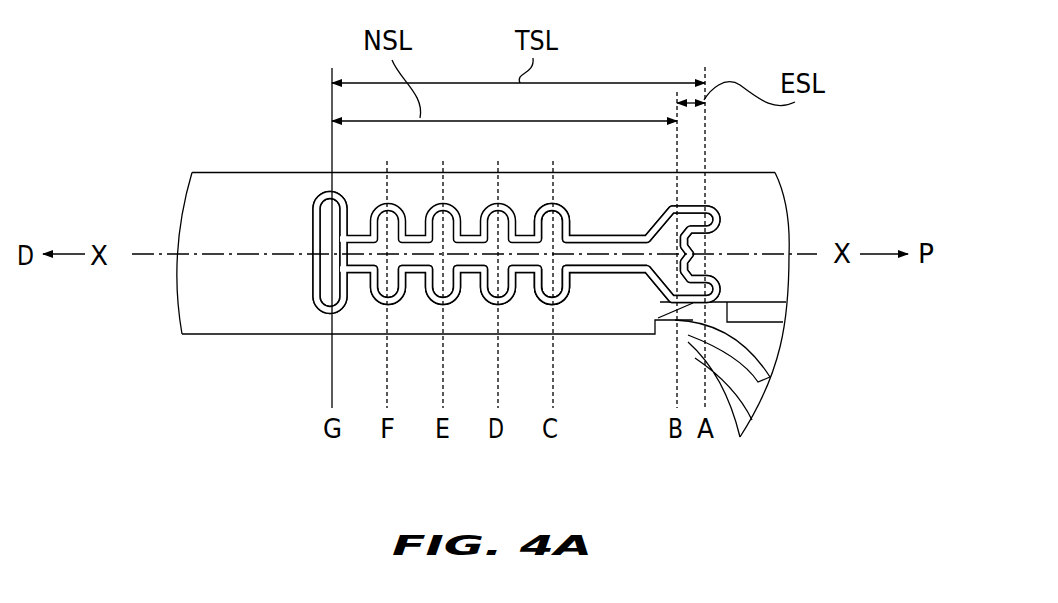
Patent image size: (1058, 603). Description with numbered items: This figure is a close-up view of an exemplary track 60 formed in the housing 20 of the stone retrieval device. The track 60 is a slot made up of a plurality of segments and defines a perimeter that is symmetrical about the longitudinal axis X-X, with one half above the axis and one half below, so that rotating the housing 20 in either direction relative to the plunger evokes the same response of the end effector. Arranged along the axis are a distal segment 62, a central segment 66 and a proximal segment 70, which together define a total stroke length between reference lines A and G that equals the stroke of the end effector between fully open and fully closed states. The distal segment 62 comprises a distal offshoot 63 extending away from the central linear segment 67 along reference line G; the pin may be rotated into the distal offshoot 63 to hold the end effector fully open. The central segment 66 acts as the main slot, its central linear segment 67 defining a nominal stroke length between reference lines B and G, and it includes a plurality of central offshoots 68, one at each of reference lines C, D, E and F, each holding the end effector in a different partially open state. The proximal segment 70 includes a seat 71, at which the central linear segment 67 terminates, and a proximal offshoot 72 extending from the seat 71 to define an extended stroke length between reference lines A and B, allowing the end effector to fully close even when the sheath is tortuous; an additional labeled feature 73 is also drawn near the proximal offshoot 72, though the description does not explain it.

The housing 20 is at (436, 240).
The track 60 is at (273, 219).
The distal segment 62 is at (263, 307).
The distal offshoot 63 is at (328, 310).
The central segment 66 is at (597, 305).
The central linear segment 67 is at (600, 237).
The central offshoot 68 is at (378, 298).
The proximal segment 70 is at (755, 286).
The seat 71 is at (721, 257).
The proximal offshoot 72 is at (661, 227).
The slot lobe 73 is at (692, 204).